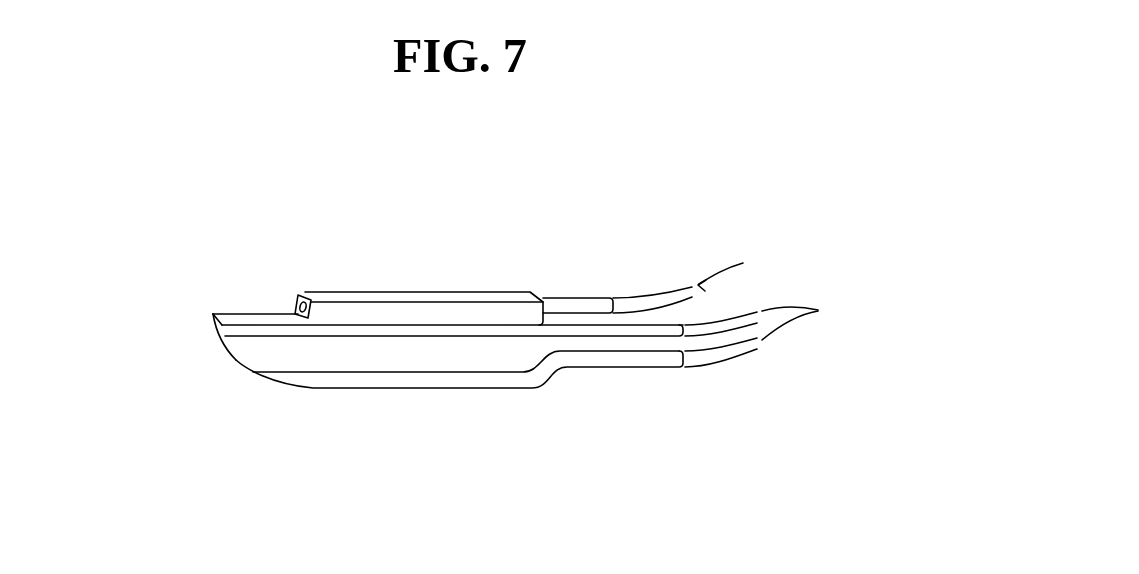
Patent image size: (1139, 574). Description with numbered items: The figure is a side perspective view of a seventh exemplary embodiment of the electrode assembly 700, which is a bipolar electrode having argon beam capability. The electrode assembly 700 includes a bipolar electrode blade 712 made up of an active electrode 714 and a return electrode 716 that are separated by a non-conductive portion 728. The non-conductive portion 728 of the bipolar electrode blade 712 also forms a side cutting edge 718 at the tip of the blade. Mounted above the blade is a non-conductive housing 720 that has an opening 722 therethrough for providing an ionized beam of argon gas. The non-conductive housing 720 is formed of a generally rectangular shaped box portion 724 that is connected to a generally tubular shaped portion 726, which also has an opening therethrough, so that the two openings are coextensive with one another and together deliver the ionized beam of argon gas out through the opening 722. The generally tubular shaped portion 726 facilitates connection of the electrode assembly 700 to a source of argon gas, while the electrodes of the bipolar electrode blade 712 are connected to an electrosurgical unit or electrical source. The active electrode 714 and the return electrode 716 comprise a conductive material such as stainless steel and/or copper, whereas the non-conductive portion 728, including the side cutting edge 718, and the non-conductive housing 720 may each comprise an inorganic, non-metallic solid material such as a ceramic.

The electrode assembly 700 is at (605, 195).
The bipolar electrode blade 712 is at (513, 353).
The active electrode 714 is at (242, 320).
The return electrode 716 is at (313, 391).
The side cutting edge 718 is at (232, 362).
The non-conductive housing 720 is at (440, 290).
The opening 722 is at (303, 293).
The box portion 724 is at (372, 310).
The tubular shaped portion 726 is at (572, 295).
The non-conductive portion 728 is at (383, 357).